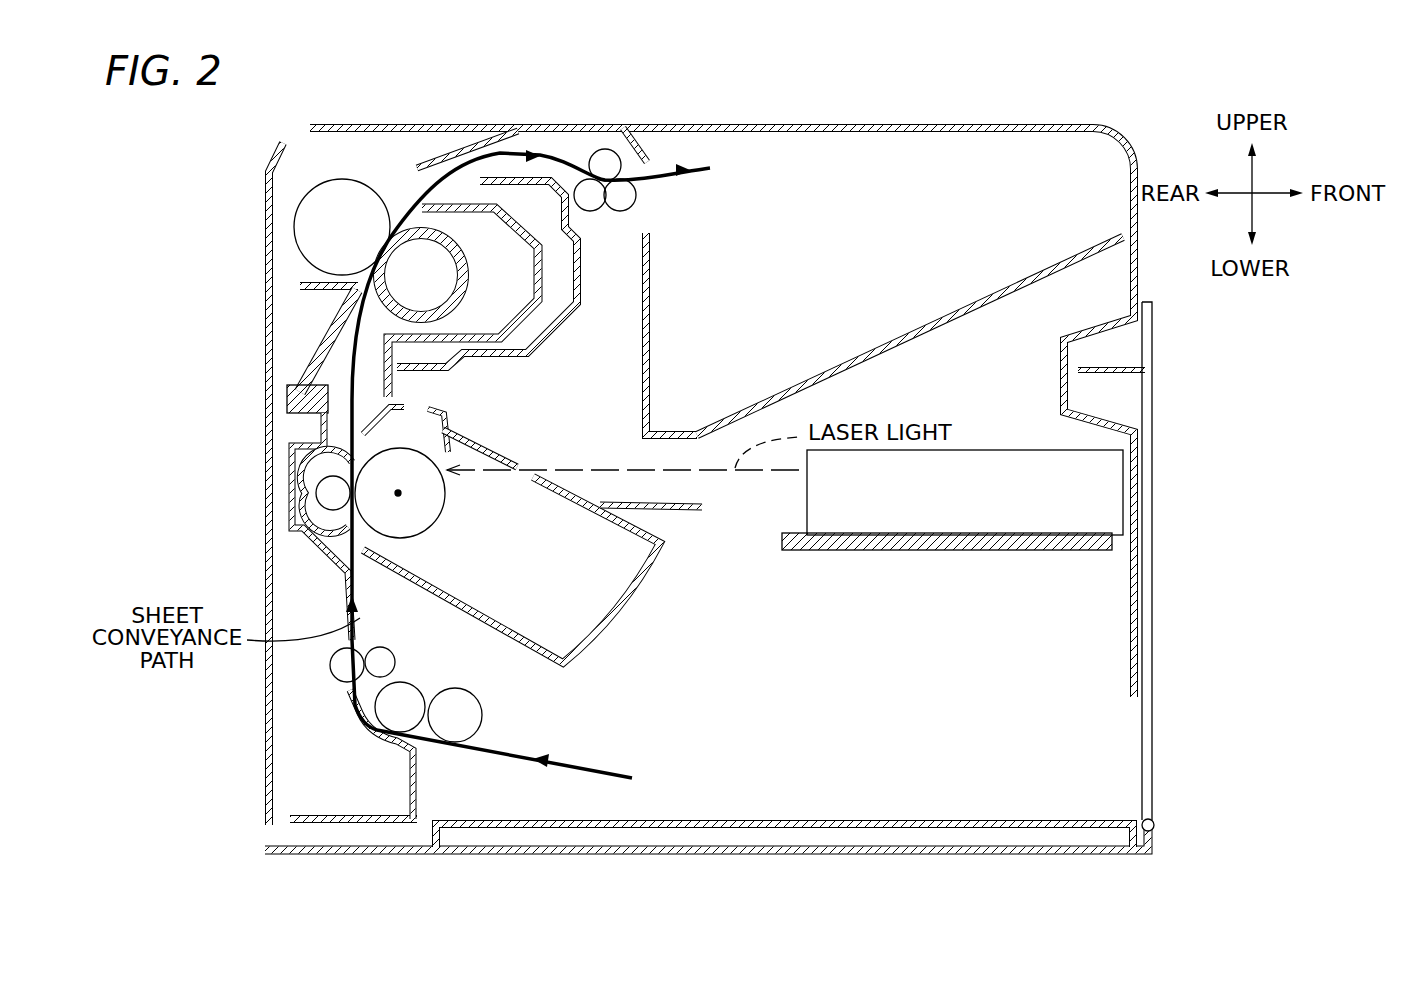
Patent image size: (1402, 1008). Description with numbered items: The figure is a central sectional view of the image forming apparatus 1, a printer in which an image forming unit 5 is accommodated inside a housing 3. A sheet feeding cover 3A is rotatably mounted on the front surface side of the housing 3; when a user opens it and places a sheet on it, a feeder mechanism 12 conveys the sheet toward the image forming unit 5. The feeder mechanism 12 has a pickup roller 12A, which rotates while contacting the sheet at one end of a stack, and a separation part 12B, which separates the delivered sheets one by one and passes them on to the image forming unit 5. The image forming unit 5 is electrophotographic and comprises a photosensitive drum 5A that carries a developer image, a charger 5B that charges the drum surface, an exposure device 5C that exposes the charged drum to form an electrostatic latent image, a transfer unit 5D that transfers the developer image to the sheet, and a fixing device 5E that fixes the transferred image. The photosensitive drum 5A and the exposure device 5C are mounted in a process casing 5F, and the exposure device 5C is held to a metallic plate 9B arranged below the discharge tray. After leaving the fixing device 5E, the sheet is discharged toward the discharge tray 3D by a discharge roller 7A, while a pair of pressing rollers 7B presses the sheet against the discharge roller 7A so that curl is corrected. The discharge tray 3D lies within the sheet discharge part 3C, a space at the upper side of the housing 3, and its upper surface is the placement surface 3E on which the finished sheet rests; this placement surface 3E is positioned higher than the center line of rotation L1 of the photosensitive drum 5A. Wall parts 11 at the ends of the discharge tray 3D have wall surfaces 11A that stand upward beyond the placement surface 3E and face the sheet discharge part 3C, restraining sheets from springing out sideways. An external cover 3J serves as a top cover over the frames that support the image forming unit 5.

The image forming apparatus 1 is at (985, 218).
The housing 3 is at (265, 350).
The sheet feeding cover 3A is at (1152, 637).
The sheet discharge part 3C is at (772, 268).
The discharge tray 3D is at (843, 358).
The placement surface 3E is at (757, 400).
The external cover 3J is at (570, 128).
The image forming unit 5 is at (578, 410).
The photosensitive drum 5A is at (446, 512).
The charger 5B is at (412, 430).
The exposure device 5C is at (1008, 552).
The transfer unit 5D is at (302, 484).
The fixing device 5E is at (385, 172).
The process casing 5F is at (642, 585).
The discharge roller 7A is at (604, 149).
The pressing rollers 7B is at (590, 211).
The plate 9B is at (913, 550).
The wall parts 11 is at (965, 123).
The wall surfaces 11A is at (893, 180).
The feeder mechanism 12 is at (378, 763).
The pickup roller 12A is at (483, 707).
The separation part 12B is at (368, 733).
The center line of rotation L1 is at (398, 493).